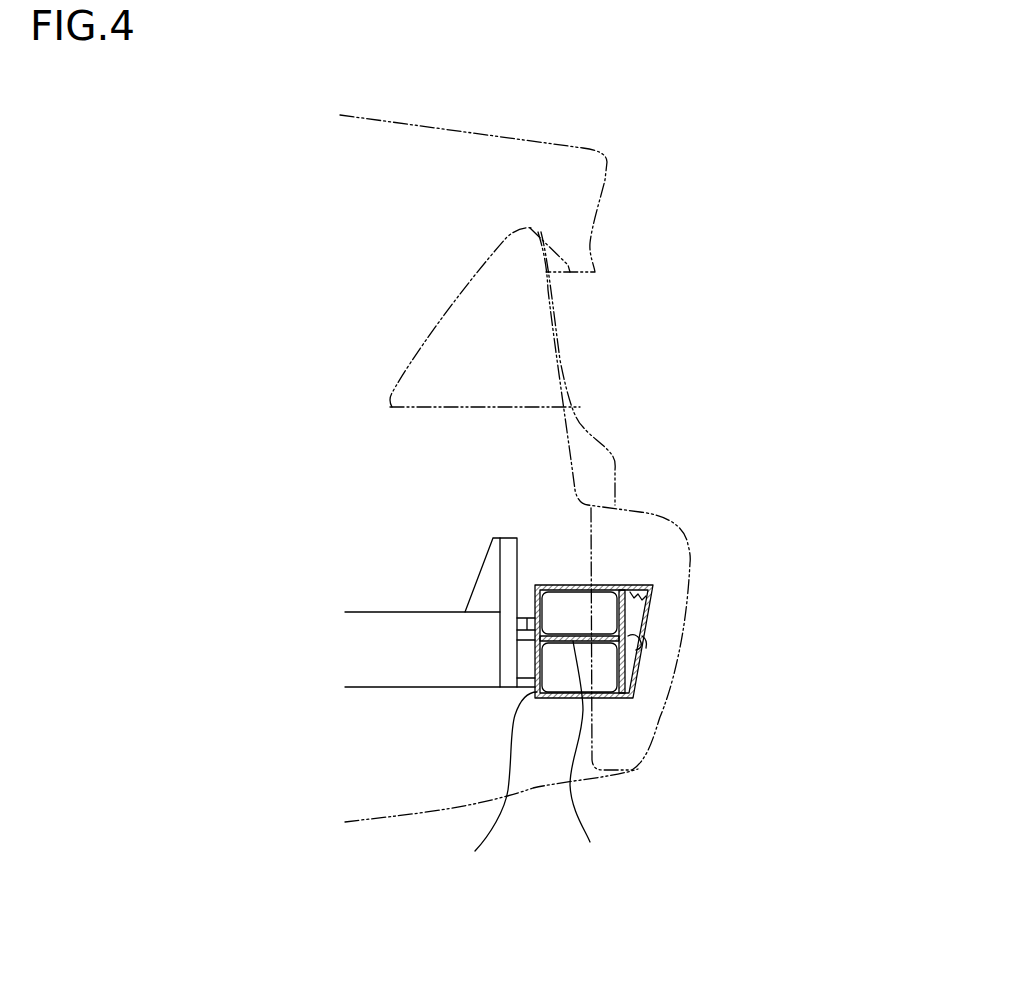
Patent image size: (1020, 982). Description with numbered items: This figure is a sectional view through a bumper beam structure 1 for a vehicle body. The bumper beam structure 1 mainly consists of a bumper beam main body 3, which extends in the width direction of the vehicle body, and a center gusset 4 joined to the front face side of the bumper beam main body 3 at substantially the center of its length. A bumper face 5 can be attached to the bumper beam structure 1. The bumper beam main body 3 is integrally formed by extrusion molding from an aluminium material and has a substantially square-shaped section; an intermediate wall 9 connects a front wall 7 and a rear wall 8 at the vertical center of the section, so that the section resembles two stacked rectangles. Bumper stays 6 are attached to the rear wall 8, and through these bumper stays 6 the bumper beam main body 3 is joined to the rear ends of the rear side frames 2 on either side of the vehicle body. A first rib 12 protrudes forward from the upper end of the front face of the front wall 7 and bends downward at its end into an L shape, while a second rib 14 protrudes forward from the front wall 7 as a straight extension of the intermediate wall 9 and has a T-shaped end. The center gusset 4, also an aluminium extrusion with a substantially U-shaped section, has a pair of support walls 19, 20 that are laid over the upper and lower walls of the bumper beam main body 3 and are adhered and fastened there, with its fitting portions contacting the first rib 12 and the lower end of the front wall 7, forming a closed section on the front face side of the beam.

The bumper beam structure 1 is at (657, 610).
The rear side frames 2 is at (392, 673).
The bumper beam main body 3 is at (496, 781).
The center gusset 4 is at (654, 592).
The bumper face 5 is at (660, 713).
The bumper stays 6 is at (527, 620).
The front wall 7 is at (625, 665).
The rear wall 8 is at (537, 644).
The intermediate wall 9 is at (584, 757).
The first rib 12 is at (623, 586).
The second rib 14 is at (643, 647).
The support wall 19 is at (560, 585).
The support wall 20 is at (558, 698).